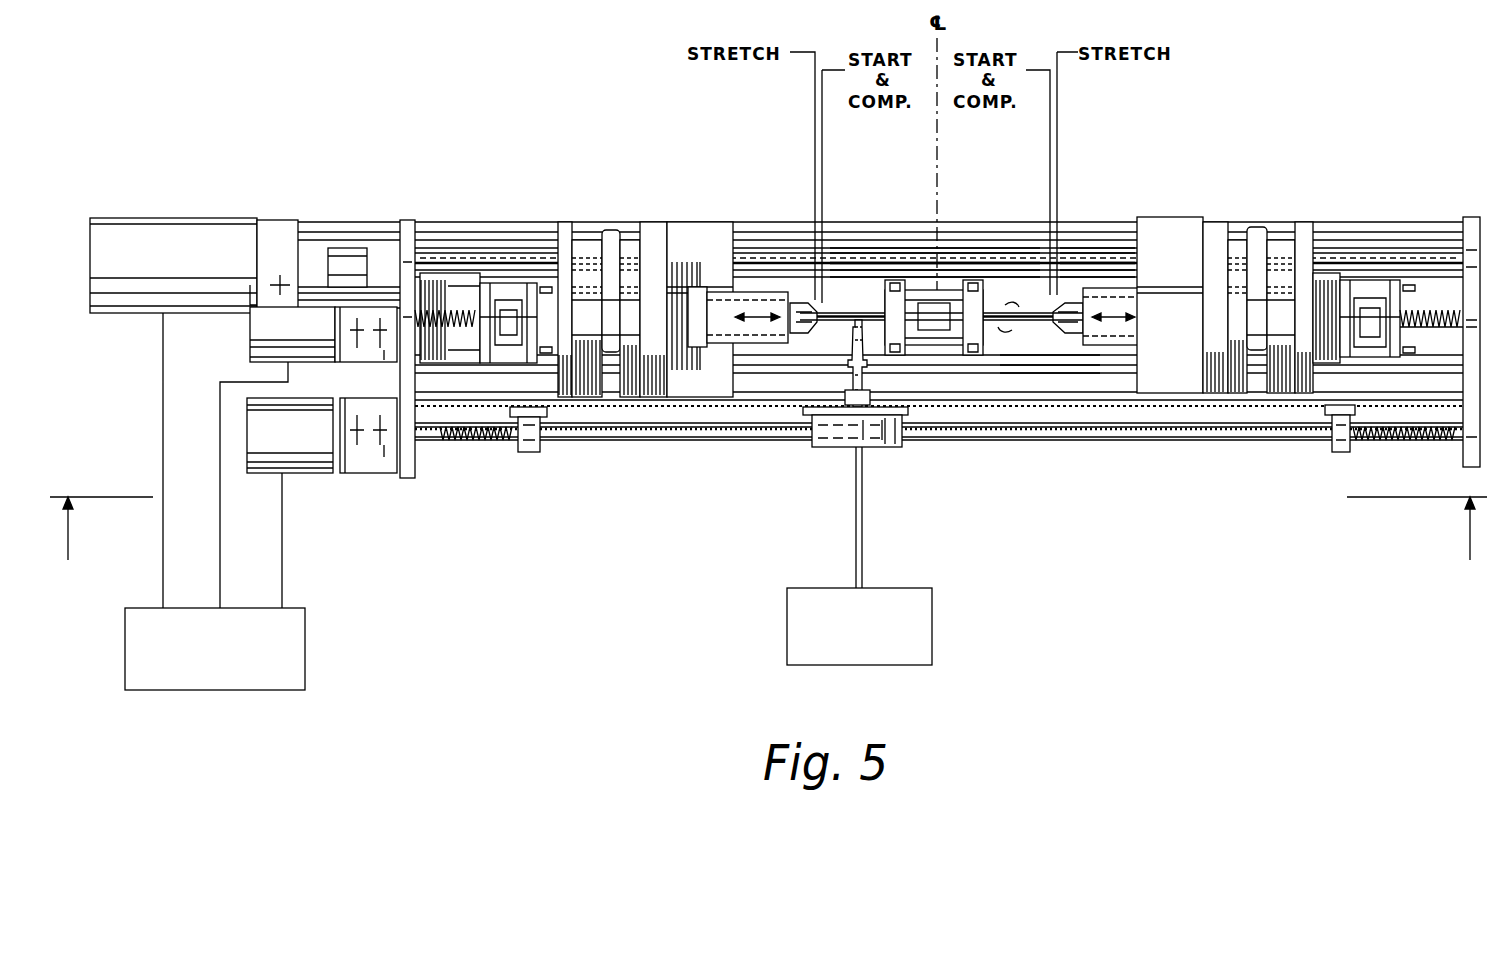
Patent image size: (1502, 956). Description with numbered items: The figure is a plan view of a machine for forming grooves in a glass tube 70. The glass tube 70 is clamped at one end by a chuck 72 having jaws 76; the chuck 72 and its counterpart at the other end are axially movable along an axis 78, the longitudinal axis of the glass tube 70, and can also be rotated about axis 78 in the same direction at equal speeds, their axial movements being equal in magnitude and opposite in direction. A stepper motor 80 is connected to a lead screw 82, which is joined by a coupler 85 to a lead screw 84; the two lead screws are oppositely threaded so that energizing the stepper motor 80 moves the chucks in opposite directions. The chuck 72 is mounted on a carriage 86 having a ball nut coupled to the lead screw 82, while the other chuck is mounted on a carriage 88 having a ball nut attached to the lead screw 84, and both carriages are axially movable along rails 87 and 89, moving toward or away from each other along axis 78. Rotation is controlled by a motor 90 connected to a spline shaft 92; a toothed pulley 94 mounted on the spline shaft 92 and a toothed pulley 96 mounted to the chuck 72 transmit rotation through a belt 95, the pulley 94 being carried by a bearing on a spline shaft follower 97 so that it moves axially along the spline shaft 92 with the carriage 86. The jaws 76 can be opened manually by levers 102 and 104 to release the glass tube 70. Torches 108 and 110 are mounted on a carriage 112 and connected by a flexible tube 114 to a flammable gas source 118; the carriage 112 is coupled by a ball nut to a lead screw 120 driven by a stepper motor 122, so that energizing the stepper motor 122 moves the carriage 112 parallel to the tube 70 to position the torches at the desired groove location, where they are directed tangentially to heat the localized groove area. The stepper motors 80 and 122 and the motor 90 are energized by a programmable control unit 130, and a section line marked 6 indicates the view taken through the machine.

The section line 6- 6 is at (768, 548).
The glass tube 70 is at (999, 305).
The chuck 72 is at (763, 296).
The jaws 76 is at (801, 300).
The axis 78 is at (694, 248).
The stepper motor 80 is at (252, 345).
The lead screw 82 is at (457, 300).
The lead screw 84 is at (1419, 305).
The coupler 85 is at (955, 292).
The carriage 86 is at (712, 234).
The rail 87 is at (1056, 375).
The carriage 88 is at (1176, 240).
The rail 89 is at (881, 250).
The motor 90 is at (226, 218).
The spline shaft 92 is at (1108, 253).
The toothed pulley 94 is at (600, 262).
The belt 95 is at (611, 230).
The toothed pulley 96 is at (628, 262).
The spline shaft follower 97 is at (588, 258).
The lever 102 is at (530, 288).
The lever 104 is at (1357, 298).
The torch 108 is at (848, 341).
The torch 110 is at (843, 445).
The carriage 112 is at (905, 430).
The flexible tube 114 is at (863, 531).
The flammable gas source 118 is at (933, 627).
The lead screw 120 is at (473, 444).
The stepper motor 122 is at (303, 476).
The programmable control unit 130 is at (277, 691).